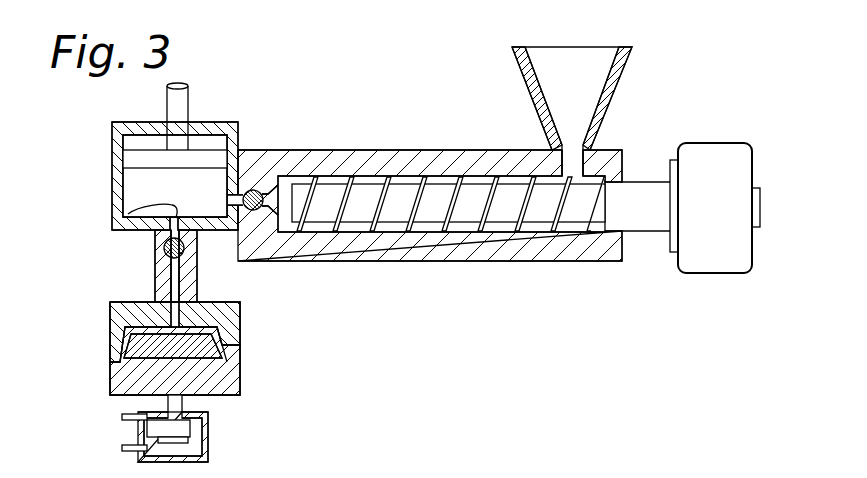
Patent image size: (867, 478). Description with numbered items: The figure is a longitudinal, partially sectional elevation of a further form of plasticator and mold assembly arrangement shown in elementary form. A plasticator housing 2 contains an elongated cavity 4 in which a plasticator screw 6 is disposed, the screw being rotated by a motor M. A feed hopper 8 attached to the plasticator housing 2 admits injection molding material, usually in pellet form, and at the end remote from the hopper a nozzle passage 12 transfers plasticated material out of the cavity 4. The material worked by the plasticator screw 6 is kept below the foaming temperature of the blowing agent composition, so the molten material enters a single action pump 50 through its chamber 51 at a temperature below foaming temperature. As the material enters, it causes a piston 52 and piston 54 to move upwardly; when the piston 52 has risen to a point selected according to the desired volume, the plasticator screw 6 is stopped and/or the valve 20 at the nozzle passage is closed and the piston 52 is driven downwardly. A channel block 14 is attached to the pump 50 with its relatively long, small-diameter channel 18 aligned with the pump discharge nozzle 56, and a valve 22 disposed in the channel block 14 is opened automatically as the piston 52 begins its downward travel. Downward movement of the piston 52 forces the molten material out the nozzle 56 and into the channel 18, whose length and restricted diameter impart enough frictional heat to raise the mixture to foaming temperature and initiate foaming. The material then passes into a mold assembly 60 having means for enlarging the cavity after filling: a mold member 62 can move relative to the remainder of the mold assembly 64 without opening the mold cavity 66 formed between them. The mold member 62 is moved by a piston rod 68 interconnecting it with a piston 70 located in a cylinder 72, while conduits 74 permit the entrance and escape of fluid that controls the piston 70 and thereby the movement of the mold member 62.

The plasticator housing 2 is at (400, 157).
The elongated cavity 4 is at (477, 177).
The plasticator screw 6 is at (498, 216).
The feed hopper 8 is at (627, 73).
The nozzle passage 12 is at (270, 200).
The channel block 14 is at (163, 248).
The channel 18 is at (158, 284).
The discharge valve 20 is at (258, 211).
The discharge valve 22 is at (192, 254).
The single action pump 50 is at (104, 121).
The chamber 51 is at (134, 186).
The piston 52 is at (217, 160).
The piston 54 is at (192, 94).
The pump discharge nozzle 56 is at (128, 213).
The mold assembly 60 is at (97, 344).
The mold member 62 is at (240, 381).
The remainder of the mold assembly 64 is at (240, 315).
The mold cavity 66 is at (224, 342).
The piston rod 68 is at (182, 405).
The piston 70 is at (190, 428).
The cylinder 72 is at (208, 452).
The conduits 74 is at (122, 448).
The motor M is at (718, 143).